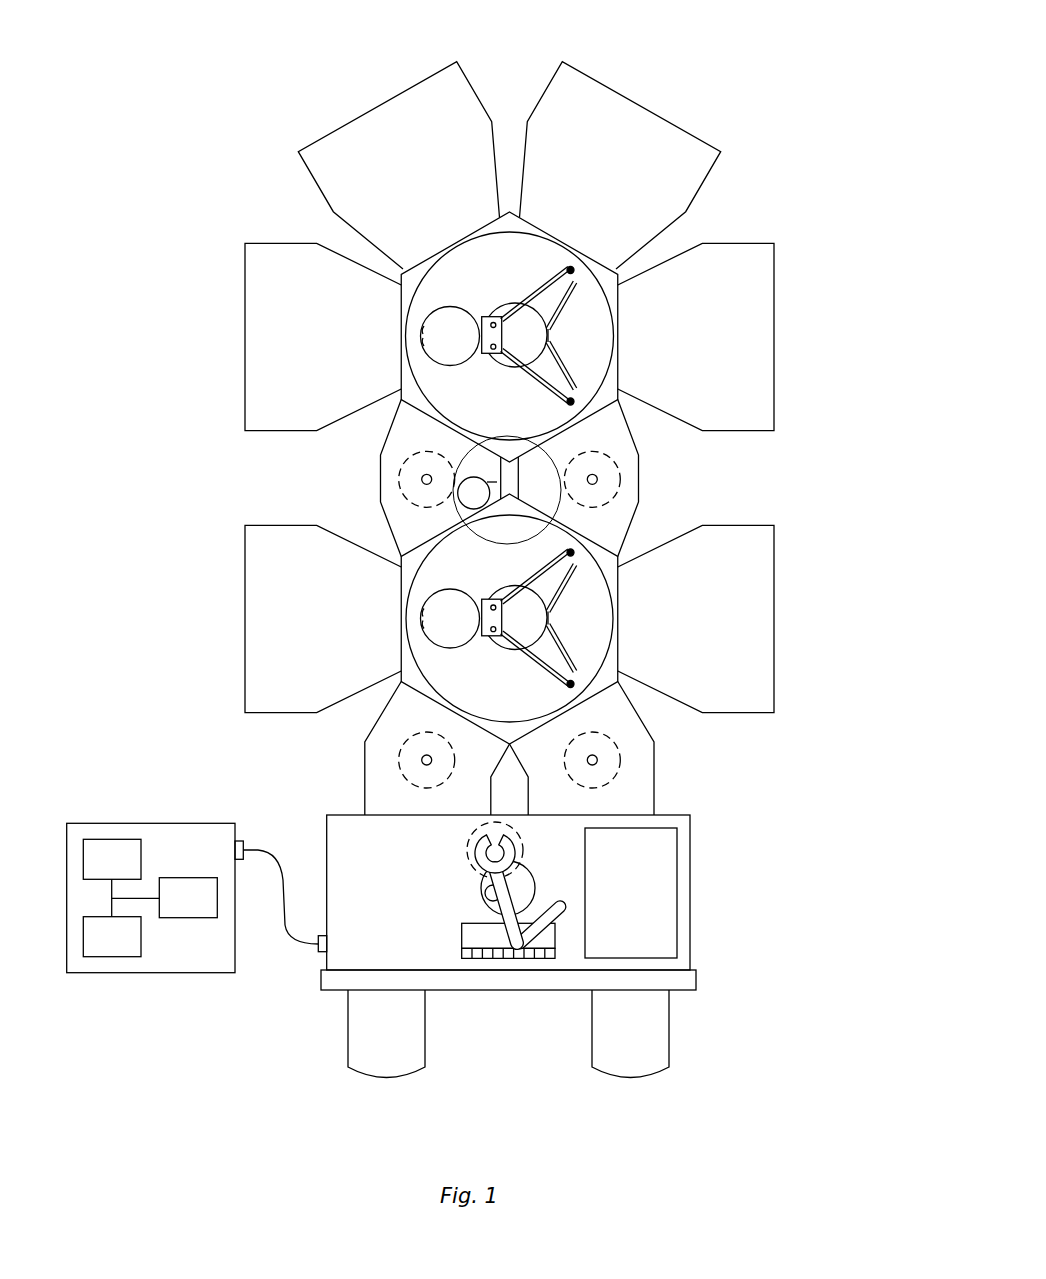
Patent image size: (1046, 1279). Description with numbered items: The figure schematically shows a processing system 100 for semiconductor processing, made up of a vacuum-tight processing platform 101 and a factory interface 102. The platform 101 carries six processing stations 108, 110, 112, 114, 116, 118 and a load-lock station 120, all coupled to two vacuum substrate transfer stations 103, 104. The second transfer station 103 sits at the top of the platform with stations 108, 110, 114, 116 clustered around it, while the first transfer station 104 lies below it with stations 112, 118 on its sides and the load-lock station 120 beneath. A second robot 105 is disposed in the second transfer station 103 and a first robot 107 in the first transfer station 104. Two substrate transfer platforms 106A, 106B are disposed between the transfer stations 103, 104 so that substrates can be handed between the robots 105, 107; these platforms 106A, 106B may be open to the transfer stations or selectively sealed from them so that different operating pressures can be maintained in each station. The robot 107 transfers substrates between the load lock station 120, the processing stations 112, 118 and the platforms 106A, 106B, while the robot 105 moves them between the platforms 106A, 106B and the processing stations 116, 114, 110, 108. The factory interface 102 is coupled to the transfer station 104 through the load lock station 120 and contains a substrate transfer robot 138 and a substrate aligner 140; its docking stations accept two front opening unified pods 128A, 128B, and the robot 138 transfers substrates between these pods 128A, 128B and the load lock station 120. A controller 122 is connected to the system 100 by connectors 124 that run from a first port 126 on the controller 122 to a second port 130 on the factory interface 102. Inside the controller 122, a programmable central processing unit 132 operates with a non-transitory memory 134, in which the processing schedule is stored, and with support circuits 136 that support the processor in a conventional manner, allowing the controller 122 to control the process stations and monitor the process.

The processing system 100 is at (203, 38).
The processing platform 101 is at (865, 47).
The factory interface 102 is at (865, 808).
The second transfer station 103 is at (527, 279).
The first transfer station 104 is at (527, 562).
The second robot 105 is at (540, 383).
The first robot 107 is at (537, 668).
The substrate transfer platform 106A is at (638, 478).
The substrate transfer platform 106B is at (380, 478).
The processing station 108 is at (645, 102).
The processing station 110 is at (380, 102).
The processing station 112 is at (778, 619).
The processing station 114 is at (245, 345).
The processing station 116 is at (778, 337).
The processing station 118 is at (245, 627).
The load-lock station 120 is at (365, 762).
The controller 122 is at (147, 823).
The connectors 124 is at (282, 877).
The first port 126 is at (242, 840).
The front opening unified pod 128A is at (348, 1032).
The front opening unified pod 128B is at (669, 1033).
The second port 130 is at (322, 953).
The central processing unit 132 is at (130, 869).
The memory 134 is at (130, 947).
The support circuits 136 is at (206, 909).
The substrate transfer robot 138 is at (462, 954).
The substrate aligner 140 is at (653, 908).